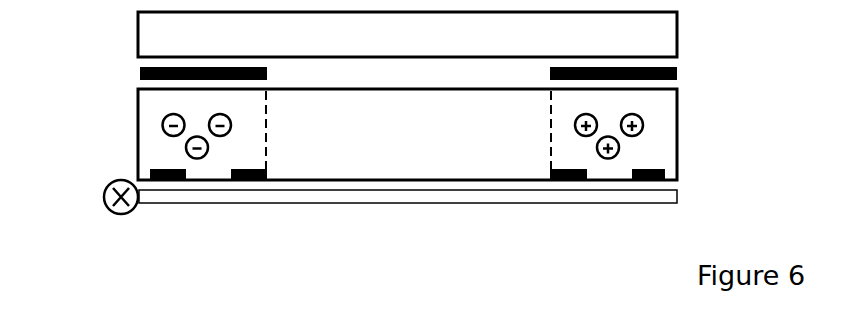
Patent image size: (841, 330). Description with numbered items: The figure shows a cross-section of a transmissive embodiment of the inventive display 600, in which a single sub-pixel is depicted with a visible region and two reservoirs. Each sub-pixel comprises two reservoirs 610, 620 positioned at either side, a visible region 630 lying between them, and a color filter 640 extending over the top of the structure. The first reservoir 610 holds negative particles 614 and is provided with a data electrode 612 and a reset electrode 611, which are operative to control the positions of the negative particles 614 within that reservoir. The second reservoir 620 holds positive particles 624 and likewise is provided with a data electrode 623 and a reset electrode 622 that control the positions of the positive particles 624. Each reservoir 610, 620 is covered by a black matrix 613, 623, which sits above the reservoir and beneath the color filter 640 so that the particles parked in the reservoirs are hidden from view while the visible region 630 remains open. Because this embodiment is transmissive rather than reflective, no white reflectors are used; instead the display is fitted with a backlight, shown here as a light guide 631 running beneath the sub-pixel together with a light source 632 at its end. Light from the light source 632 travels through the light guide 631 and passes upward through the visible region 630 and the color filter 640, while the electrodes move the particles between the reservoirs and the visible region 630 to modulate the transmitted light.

The electrophoretic display device 600 is at (98, 122).
The reservoir 610 is at (138, 157).
The reset electrode 611 is at (167, 182).
The data electrode 612 is at (242, 182).
The black matrix 613 is at (138, 72).
The negative particles 614 is at (162, 125).
The reservoir 620 is at (665, 106).
The reset electrode 622 is at (667, 174).
The data electrode / black matrix 623 is at (676, 72).
The positive particles 624 is at (641, 122).
The visible region 630 is at (348, 143).
The light guide 631 is at (412, 197).
The light source 632 is at (104, 210).
The color filter 640 is at (666, 37).